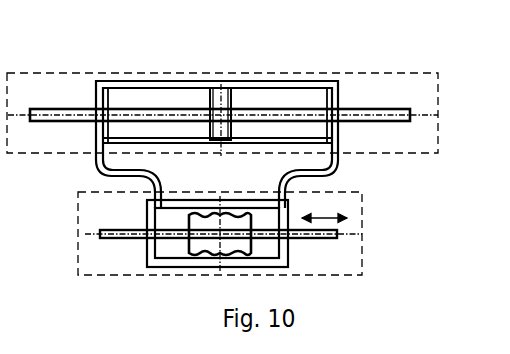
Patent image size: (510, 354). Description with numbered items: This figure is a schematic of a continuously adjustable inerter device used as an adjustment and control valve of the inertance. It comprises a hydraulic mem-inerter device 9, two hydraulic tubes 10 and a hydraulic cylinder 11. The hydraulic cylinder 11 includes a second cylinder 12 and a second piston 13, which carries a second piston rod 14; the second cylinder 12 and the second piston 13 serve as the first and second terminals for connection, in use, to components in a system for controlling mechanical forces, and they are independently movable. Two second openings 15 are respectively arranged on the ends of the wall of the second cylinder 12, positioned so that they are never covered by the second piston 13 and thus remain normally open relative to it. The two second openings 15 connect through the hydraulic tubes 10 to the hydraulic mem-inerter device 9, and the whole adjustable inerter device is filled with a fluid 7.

The fluid 7 is at (142, 103).
The hydraulic mem-inerter device 9 is at (363, 242).
The hydraulic tubes 10 is at (322, 172).
The hydraulic cylinder 11 is at (438, 125).
The second cylinder 12 is at (292, 83).
The second piston 13 is at (223, 84).
The second piston rod 14 is at (177, 109).
The second openings 15 is at (108, 88).